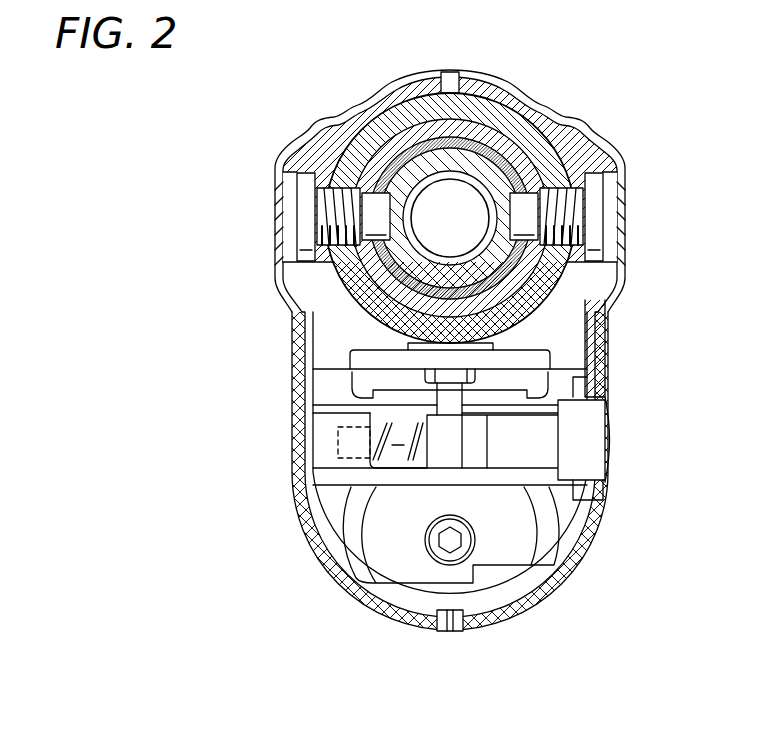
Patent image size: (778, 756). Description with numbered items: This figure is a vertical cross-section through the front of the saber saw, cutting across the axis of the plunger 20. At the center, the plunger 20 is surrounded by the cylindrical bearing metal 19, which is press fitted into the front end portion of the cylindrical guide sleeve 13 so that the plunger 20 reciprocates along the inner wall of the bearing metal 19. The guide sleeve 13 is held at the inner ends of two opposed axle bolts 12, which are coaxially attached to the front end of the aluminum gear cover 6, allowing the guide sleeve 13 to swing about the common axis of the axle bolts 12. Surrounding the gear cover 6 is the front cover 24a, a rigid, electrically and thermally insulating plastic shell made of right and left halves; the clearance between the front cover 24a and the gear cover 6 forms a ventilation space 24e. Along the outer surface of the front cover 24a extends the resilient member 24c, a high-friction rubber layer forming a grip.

The gear cover 6 is at (487, 95).
The axle bolts 12 is at (297, 217).
The guide sleeve 13 is at (405, 130).
The bearing metal 19 is at (560, 122).
The plunger 20 is at (572, 282).
The front cover 24a is at (325, 560).
The resilient member 24c is at (363, 618).
The ventilation space 24e is at (568, 338).